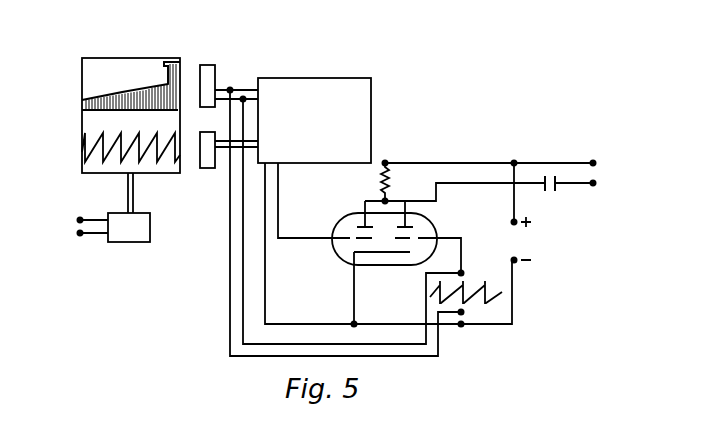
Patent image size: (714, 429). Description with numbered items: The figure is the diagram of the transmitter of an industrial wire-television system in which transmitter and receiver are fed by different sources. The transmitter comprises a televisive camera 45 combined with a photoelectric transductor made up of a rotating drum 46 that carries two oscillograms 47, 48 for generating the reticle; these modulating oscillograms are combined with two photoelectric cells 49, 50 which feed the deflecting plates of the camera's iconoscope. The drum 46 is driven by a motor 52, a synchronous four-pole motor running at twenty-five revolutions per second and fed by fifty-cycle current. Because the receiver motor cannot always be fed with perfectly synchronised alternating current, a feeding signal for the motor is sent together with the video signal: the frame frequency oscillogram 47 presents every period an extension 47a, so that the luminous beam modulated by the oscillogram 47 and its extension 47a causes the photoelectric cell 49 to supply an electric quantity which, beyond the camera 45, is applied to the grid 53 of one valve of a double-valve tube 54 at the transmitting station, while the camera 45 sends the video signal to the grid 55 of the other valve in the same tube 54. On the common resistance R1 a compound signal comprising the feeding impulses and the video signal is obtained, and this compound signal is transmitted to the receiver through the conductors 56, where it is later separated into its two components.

The televisive camera 45 is at (361, 112).
The rotating drum 46 is at (89, 72).
The frame frequency oscillogram 47 is at (131, 92).
The extension 47a is at (170, 67).
The oscillogram 48 is at (90, 147).
The photoelectric cell 49 is at (213, 70).
The photoelectric cell 50 is at (208, 165).
The motor 52 is at (150, 230).
The grid 53 is at (421, 240).
The tube provided with a double valve 54 is at (342, 252).
The grid 55 is at (343, 238).
The conductors 56 is at (585, 183).
The resistance R1 is at (372, 181).